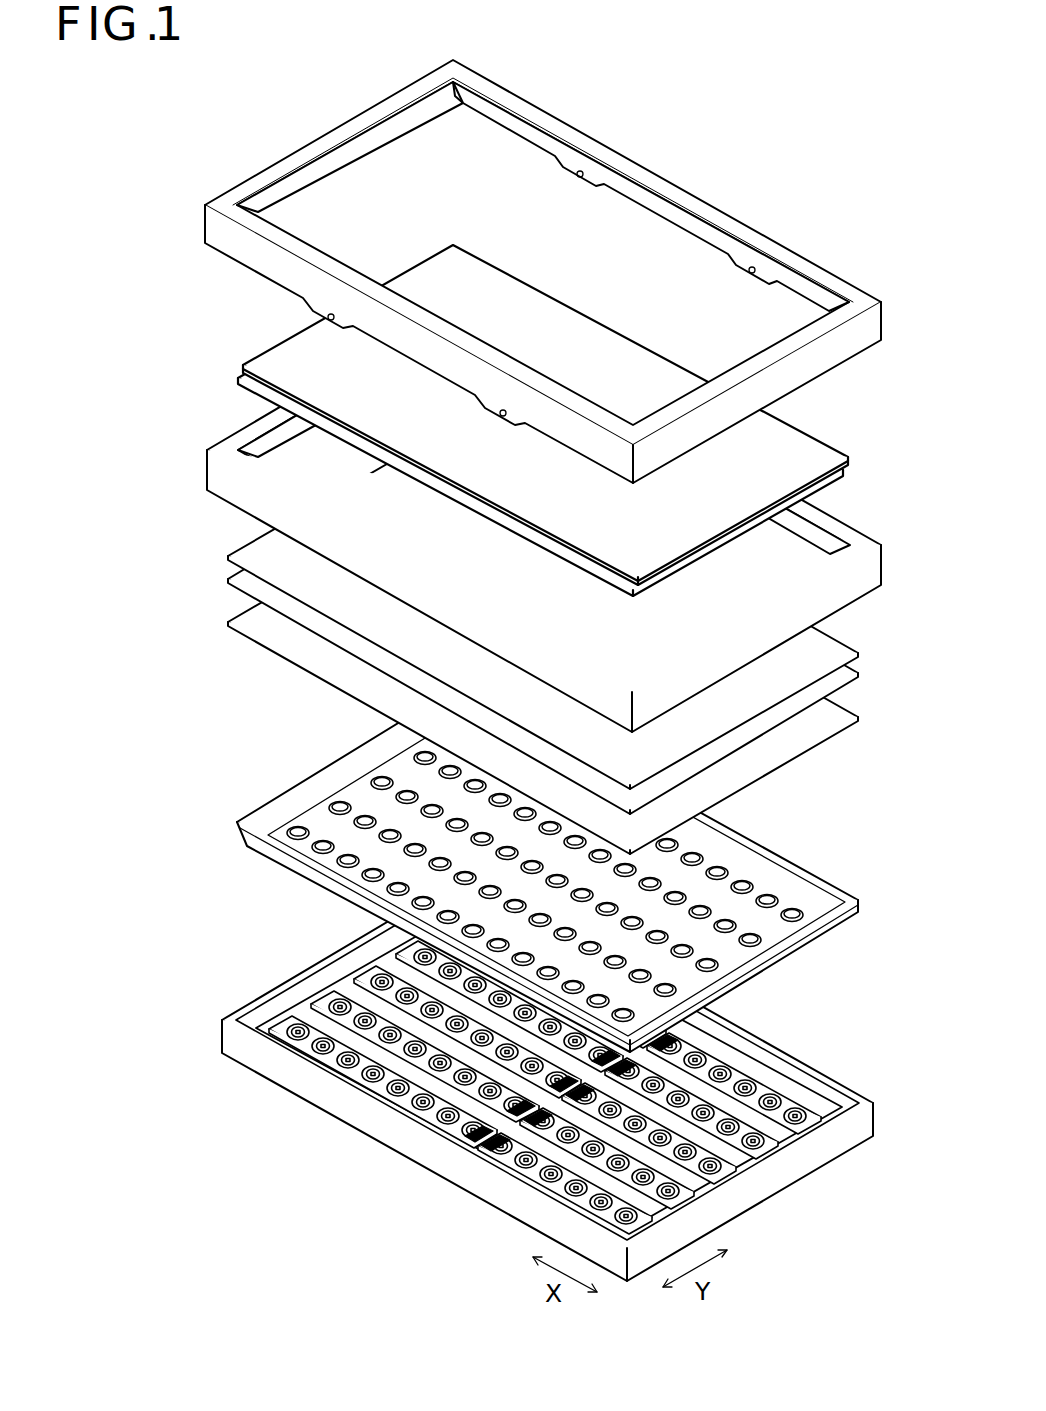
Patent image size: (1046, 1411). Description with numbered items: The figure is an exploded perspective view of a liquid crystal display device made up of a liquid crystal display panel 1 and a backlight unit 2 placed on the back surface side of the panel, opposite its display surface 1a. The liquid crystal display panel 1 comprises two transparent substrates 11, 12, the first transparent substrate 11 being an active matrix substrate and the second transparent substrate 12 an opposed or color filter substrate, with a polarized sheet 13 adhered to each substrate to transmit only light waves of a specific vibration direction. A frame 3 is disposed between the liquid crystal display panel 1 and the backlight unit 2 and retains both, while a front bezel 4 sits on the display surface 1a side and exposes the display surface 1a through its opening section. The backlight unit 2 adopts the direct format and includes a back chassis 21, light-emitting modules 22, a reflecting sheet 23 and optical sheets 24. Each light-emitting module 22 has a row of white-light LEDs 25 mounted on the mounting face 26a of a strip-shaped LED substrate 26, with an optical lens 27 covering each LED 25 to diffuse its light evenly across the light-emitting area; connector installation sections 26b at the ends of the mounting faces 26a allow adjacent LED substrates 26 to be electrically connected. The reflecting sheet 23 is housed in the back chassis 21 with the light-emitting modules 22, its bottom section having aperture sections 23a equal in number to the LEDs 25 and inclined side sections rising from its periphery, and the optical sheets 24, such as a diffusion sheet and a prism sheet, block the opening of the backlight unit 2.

The liquid crystal display panel 1 is at (455, 420).
The display surface 1a is at (354, 376).
The transparent substrate 11 is at (240, 381).
The transparent substrate 12 is at (245, 371).
The polarized sheet 13 is at (245, 364).
The backlight unit 2 is at (467, 852).
The frame 3 is at (205, 466).
The front bezel 4 is at (205, 229).
The back chassis 21 is at (222, 1033).
The light-emitting module 22 is at (457, 1073).
The reflecting sheet 23 is at (476, 867).
The aperture section 23a is at (362, 815).
The optical sheet 24 is at (476, 639).
The LED 25 is at (290, 1034).
The LED substrate 26 is at (409, 1100).
The mounting face 26a is at (333, 1056).
The connector installation section 26b is at (492, 1143).
The optical lens 27 is at (300, 1025).